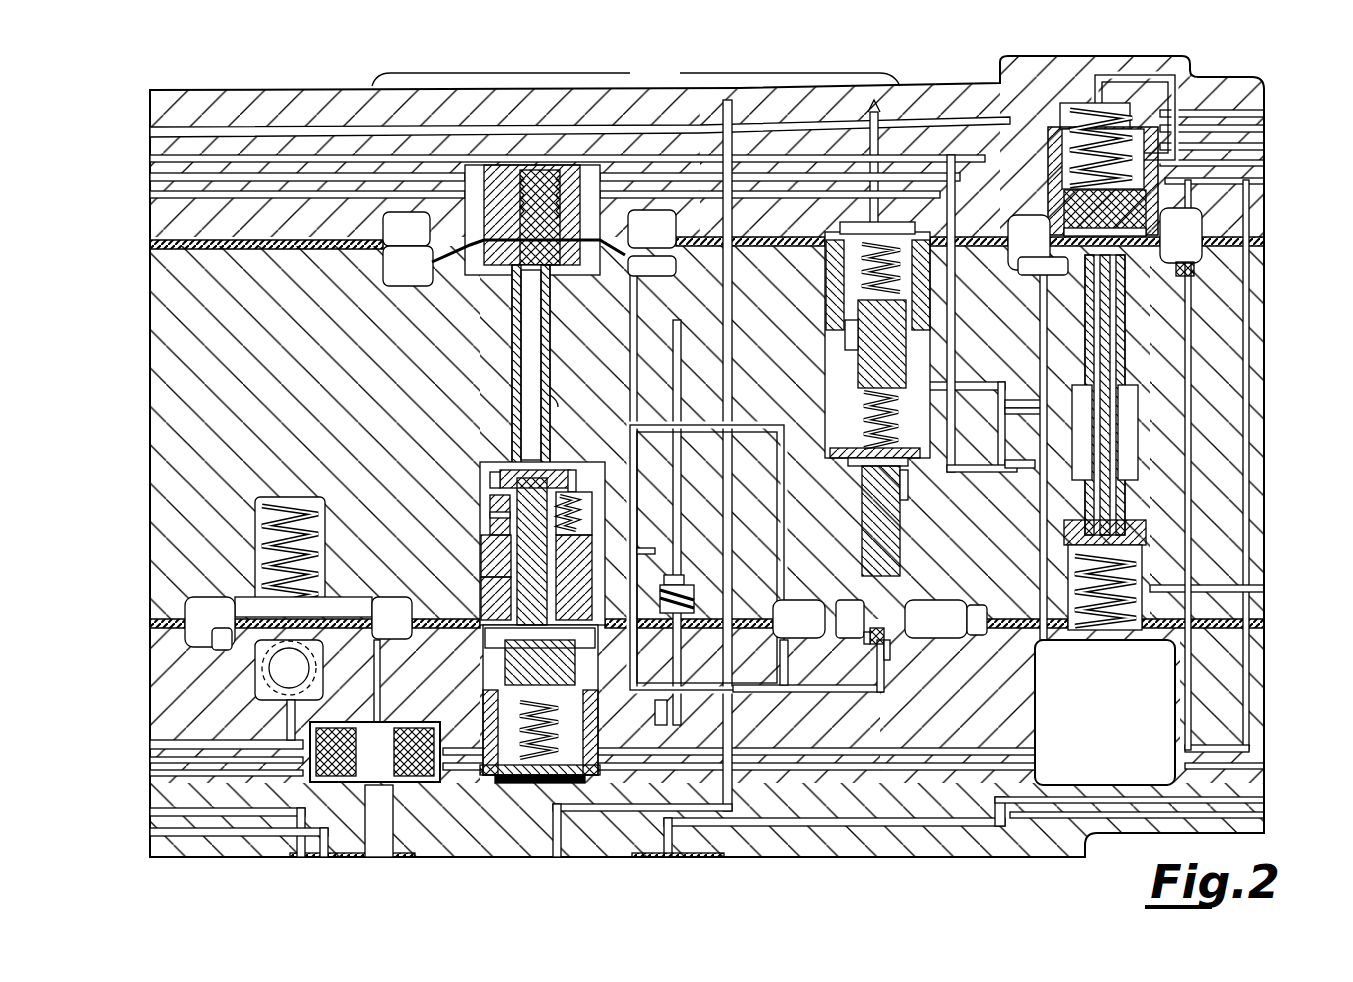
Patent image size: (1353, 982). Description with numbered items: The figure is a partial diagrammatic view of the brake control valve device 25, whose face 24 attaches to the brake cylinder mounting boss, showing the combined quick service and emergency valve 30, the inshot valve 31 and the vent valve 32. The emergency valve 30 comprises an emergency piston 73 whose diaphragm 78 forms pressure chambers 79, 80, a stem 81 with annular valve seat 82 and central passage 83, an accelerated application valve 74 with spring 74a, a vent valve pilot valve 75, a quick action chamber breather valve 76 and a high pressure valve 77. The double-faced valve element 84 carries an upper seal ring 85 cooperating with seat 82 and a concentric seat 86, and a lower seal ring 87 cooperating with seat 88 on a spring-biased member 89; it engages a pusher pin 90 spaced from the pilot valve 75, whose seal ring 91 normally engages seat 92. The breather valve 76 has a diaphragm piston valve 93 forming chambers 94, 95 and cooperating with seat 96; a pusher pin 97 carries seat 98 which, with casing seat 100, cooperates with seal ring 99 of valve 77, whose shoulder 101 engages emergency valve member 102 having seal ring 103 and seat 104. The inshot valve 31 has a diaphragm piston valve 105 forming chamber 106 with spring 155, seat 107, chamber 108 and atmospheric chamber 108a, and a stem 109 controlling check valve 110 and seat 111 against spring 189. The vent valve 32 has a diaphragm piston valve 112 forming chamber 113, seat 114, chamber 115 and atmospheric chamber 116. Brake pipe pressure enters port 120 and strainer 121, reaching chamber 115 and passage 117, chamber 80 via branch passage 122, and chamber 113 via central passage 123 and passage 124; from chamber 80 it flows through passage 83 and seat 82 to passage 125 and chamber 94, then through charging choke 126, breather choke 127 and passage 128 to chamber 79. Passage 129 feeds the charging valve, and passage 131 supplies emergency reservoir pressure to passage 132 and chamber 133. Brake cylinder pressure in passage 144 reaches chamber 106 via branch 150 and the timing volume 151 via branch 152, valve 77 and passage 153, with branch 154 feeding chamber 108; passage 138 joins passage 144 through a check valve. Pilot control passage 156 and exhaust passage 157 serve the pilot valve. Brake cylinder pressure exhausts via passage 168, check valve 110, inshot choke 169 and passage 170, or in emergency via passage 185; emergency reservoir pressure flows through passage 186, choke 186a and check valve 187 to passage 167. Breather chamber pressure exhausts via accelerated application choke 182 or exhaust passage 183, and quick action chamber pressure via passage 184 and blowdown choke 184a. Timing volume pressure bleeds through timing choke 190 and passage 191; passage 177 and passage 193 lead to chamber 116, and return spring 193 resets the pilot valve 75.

The face 24 is at (648, 857).
The brake control valve device 25 is at (1272, 504).
The combined quick service and emergency valve 30 is at (643, 76).
The inshot valve 31 is at (1066, 84).
The vent valve 32 is at (276, 490).
The emergency piston 73 is at (492, 266).
The accelerated application valve 74 is at (490, 486).
The spring 74a is at (498, 645).
The vent valve pilot valve 75 is at (500, 782).
The quick action chamber breather valve 76 is at (826, 600).
The high pressure valve 77 is at (850, 438).
The diaphragm 78 is at (390, 226).
The pressure chamber 79 is at (665, 222).
The pressure chamber 80 is at (665, 268).
The stem 81 is at (545, 317).
The annular valve seat 82 is at (547, 455).
The central passage 83 is at (530, 335).
The double-faced valve element 84 is at (516, 470).
The annular seal ring 85 is at (576, 471).
The annular valve seat 86 is at (494, 474).
The annular seal ring 87 is at (494, 500).
The annular valve seat 88 is at (592, 498).
The spring-biased member 89 is at (490, 560).
The pusher pin 90 is at (488, 590).
The annular seal ring 91 is at (588, 700).
The annular valve seat 92 is at (505, 672).
The diaphragm piston valve 93 is at (972, 636).
The pressure chamber 94 is at (850, 600).
The pressure chamber 95 is at (886, 640).
The annular valve seat 96 is at (866, 642).
The pusher pin 97 is at (890, 520).
The annular valve seat 98 is at (902, 482).
The annular seal ring 99 is at (836, 450).
The annular valve seat 100 is at (850, 462).
The shoulder 101 is at (850, 290).
The emergency valve member 102 is at (836, 290).
The annular seal ring 103 is at (846, 320).
The annular valve seat 104 is at (846, 345).
The diaphragm piston valve 105 is at (1010, 254).
The chamber 106 is at (1062, 130).
The annular valve seat 107 is at (1040, 272).
The pressure chamber 108 is at (1130, 250).
The chamber 108a is at (1110, 262).
The stem 109 is at (1110, 320).
The check valve 110 is at (1146, 535).
The annular valve seat 111 is at (1128, 500).
The diaphragm piston valve 112 is at (248, 604).
The pressure chamber 113 is at (262, 533).
The annular valve seat 114 is at (232, 650).
The pressure chamber 115 is at (186, 636).
The atmospheric chamber 116 is at (255, 685).
The passage 117 is at (818, 750).
The port 120 is at (385, 857).
The brake pipe strainer 121 is at (364, 722).
The branch passage 122 is at (630, 297).
The central passage 123 is at (498, 705).
The passage 124 is at (407, 598).
The passage 125 is at (630, 430).
The quick action chamber charging choke 126 is at (914, 600).
The breather choke 127 is at (888, 655).
The passage 128 is at (732, 112).
The passage 129 is at (152, 773).
The passage 131 is at (152, 812).
The passage 132 is at (152, 131).
The chamber 133 is at (845, 236).
The passage 138 is at (152, 194).
The passage 144 is at (152, 176).
The branch 150 is at (1192, 68).
The timing volume 151 is at (1052, 712).
The branch 152 is at (947, 180).
The passage 153 is at (1045, 412).
The branch 154 is at (1040, 325).
The spring 155 is at (1050, 170).
The pilot control passage 156 is at (152, 158).
The exhaust passage 157 is at (1264, 181).
The passage 167 is at (152, 832).
The passage 168 is at (1264, 589).
The inshot choke 169 is at (1048, 400).
The passage 170 is at (152, 210).
The passage 177 is at (152, 760).
The accelerated application choke 182 is at (552, 410).
The exhaust passage 183 is at (672, 712).
The passage 184 is at (624, 560).
The blowdown choke 184a is at (490, 516).
The passage 185 is at (1022, 462).
The passage 186 is at (152, 744).
The choke 186a is at (684, 585).
The one-way check valve 187 is at (669, 576).
The spring 189 is at (1140, 572).
The timing choke 190 is at (1194, 270).
The passage 191 is at (1191, 412).
The return spring 193 is at (520, 776).